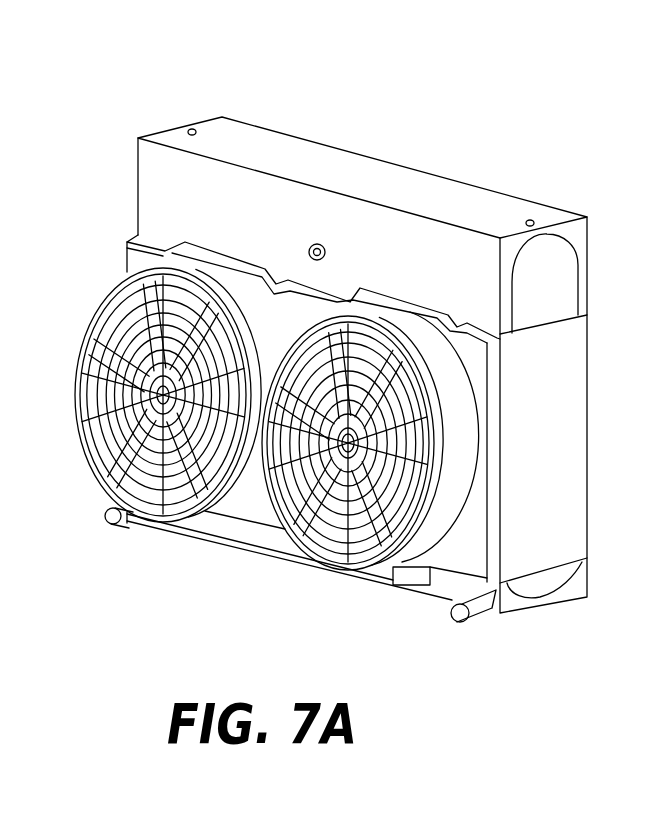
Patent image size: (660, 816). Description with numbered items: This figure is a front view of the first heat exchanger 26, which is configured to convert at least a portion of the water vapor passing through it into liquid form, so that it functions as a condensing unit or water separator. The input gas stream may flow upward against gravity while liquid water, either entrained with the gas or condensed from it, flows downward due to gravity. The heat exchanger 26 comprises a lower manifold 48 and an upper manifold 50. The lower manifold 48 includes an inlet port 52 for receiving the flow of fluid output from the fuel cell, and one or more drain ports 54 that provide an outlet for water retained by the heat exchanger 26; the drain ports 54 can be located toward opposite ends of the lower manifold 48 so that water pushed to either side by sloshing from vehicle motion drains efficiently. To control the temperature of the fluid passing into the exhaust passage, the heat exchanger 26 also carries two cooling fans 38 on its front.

The first heat exchanger 26 is at (221, 76).
The upper manifold 50 is at (421, 142).
The lower manifold 48 is at (548, 635).
The inlet port 52 is at (269, 533).
The fans 38 is at (63, 464).
The drain ports 54 is at (100, 534).